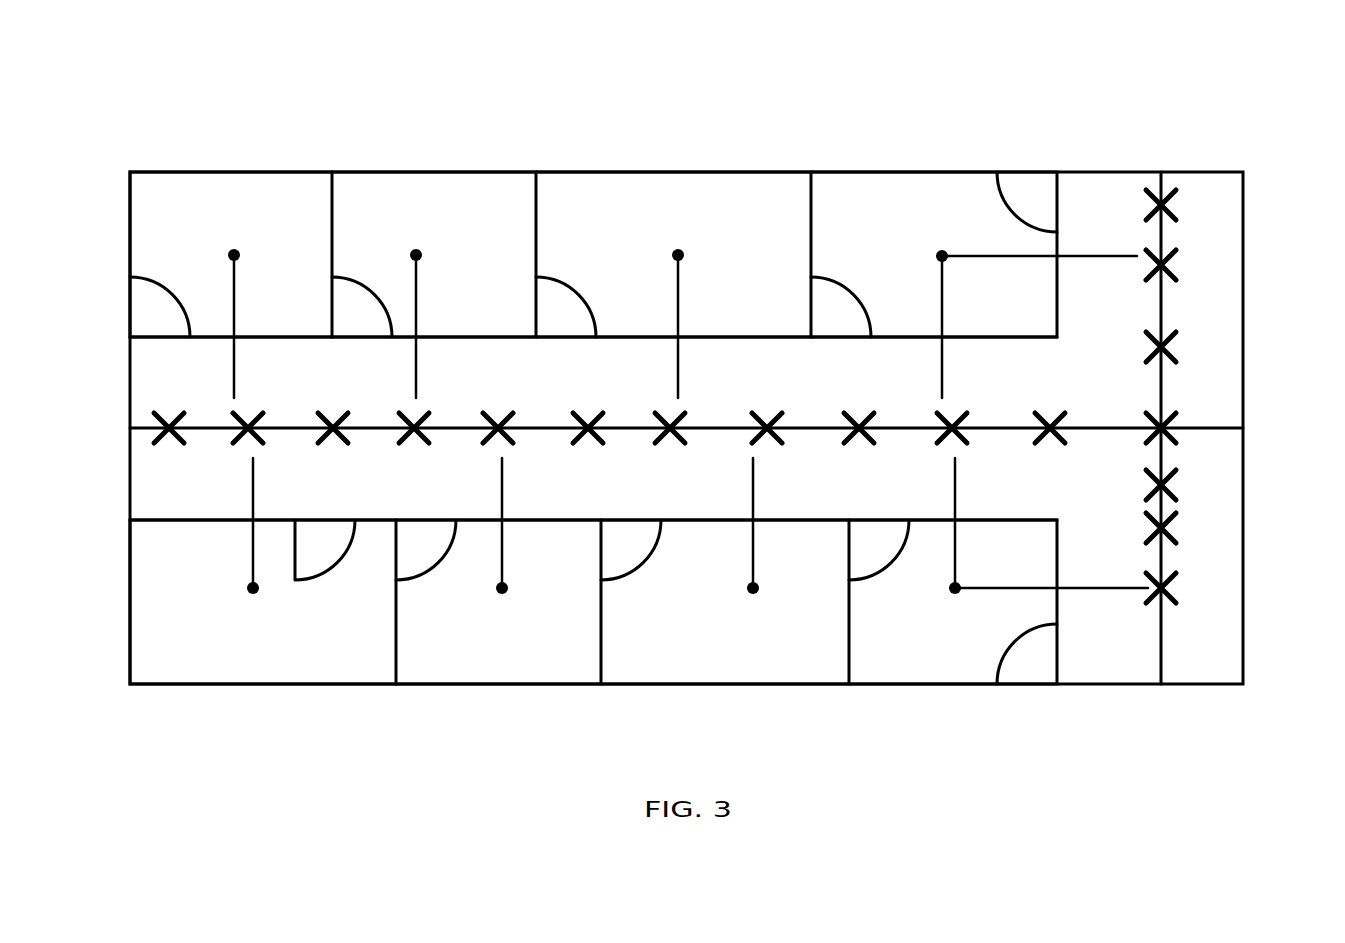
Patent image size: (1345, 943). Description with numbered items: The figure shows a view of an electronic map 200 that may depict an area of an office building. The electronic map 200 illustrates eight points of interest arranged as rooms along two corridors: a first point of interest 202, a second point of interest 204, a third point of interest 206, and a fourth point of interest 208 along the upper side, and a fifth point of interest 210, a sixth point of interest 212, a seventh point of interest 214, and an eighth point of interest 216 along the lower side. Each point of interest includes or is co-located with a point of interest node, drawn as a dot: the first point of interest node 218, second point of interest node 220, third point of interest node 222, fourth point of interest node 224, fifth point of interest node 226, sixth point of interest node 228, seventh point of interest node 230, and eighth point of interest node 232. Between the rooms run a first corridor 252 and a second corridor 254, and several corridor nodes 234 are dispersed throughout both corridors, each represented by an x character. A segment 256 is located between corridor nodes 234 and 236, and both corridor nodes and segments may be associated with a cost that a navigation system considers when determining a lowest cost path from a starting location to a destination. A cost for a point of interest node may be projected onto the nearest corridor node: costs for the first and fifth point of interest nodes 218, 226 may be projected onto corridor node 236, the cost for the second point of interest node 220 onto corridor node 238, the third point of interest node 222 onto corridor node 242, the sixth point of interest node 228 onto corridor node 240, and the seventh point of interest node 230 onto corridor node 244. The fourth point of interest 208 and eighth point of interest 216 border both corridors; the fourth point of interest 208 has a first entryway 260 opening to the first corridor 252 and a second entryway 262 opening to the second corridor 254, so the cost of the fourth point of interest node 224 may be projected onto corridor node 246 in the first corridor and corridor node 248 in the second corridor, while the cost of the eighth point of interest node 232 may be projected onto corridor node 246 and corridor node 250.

The electronic map 200 is at (1266, 82).
The first point of interest 202 is at (222, 172).
The second point of interest 204 is at (437, 172).
The third point of interest 206 is at (645, 172).
The fourth point of interest 208 is at (928, 172).
The fifth point of interest 210 is at (252, 686).
The sixth point of interest 212 is at (481, 686).
The seventh point of interest 214 is at (683, 686).
The eighth point of interest 216 is at (913, 686).
The first point of interest node 218 is at (236, 252).
The second point of interest node 220 is at (418, 252).
The third point of interest node 222 is at (680, 252).
The fourth point of interest node 224 is at (940, 252).
The fifth point of interest node 226 is at (256, 592).
The sixth point of interest node 228 is at (505, 592).
The seventh point of interest node 230 is at (756, 592).
The eighth point of interest node 232 is at (958, 584).
The corridor node 234 is at (160, 410).
The corridor node 236 is at (258, 414).
The corridor node 238 is at (425, 414).
The corridor node 240 is at (510, 414).
The corridor node 242 is at (680, 445).
The corridor node 244 is at (778, 414).
The corridor node 246 is at (963, 414).
The corridor node 248 is at (1172, 250).
The corridor node 250 is at (1174, 574).
The first corridor 252 is at (130, 477).
The second corridor 254 is at (1215, 665).
The segment 256 is at (203, 432).
The first entryway 260 is at (838, 337).
The second entryway 262 is at (1030, 180).